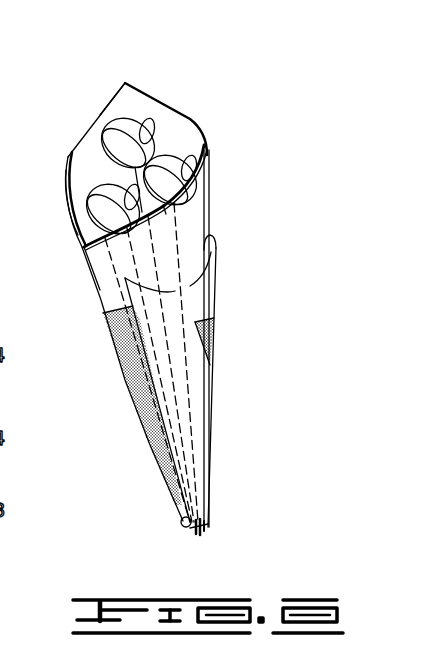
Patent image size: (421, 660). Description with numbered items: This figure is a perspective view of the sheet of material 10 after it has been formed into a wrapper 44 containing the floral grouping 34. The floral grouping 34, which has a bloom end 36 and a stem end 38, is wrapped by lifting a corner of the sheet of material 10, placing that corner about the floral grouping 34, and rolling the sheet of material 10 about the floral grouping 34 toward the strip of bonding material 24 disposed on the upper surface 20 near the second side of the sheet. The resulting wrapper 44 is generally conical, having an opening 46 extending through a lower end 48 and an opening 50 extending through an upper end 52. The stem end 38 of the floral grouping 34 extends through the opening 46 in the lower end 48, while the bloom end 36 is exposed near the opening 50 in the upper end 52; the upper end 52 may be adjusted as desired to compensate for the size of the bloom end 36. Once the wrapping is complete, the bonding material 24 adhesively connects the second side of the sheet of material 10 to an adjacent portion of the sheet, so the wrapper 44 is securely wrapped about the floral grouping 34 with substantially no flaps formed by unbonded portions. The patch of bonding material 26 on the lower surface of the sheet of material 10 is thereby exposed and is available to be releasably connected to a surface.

The sheet of material 10 is at (137, 93).
The upper surface 20 is at (174, 136).
The upper end 52 is at (112, 100).
The opening 50 is at (90, 162).
The bloom end 36 is at (183, 180).
The stem end 38 is at (205, 540).
The strip of bonding material 24 is at (198, 288).
The wrapper 44 is at (235, 251).
The floral grouping 34 is at (111, 260).
The patch of bonding material 26 is at (137, 360).
The opening 46 is at (192, 533).
The lower end 48 is at (205, 527).